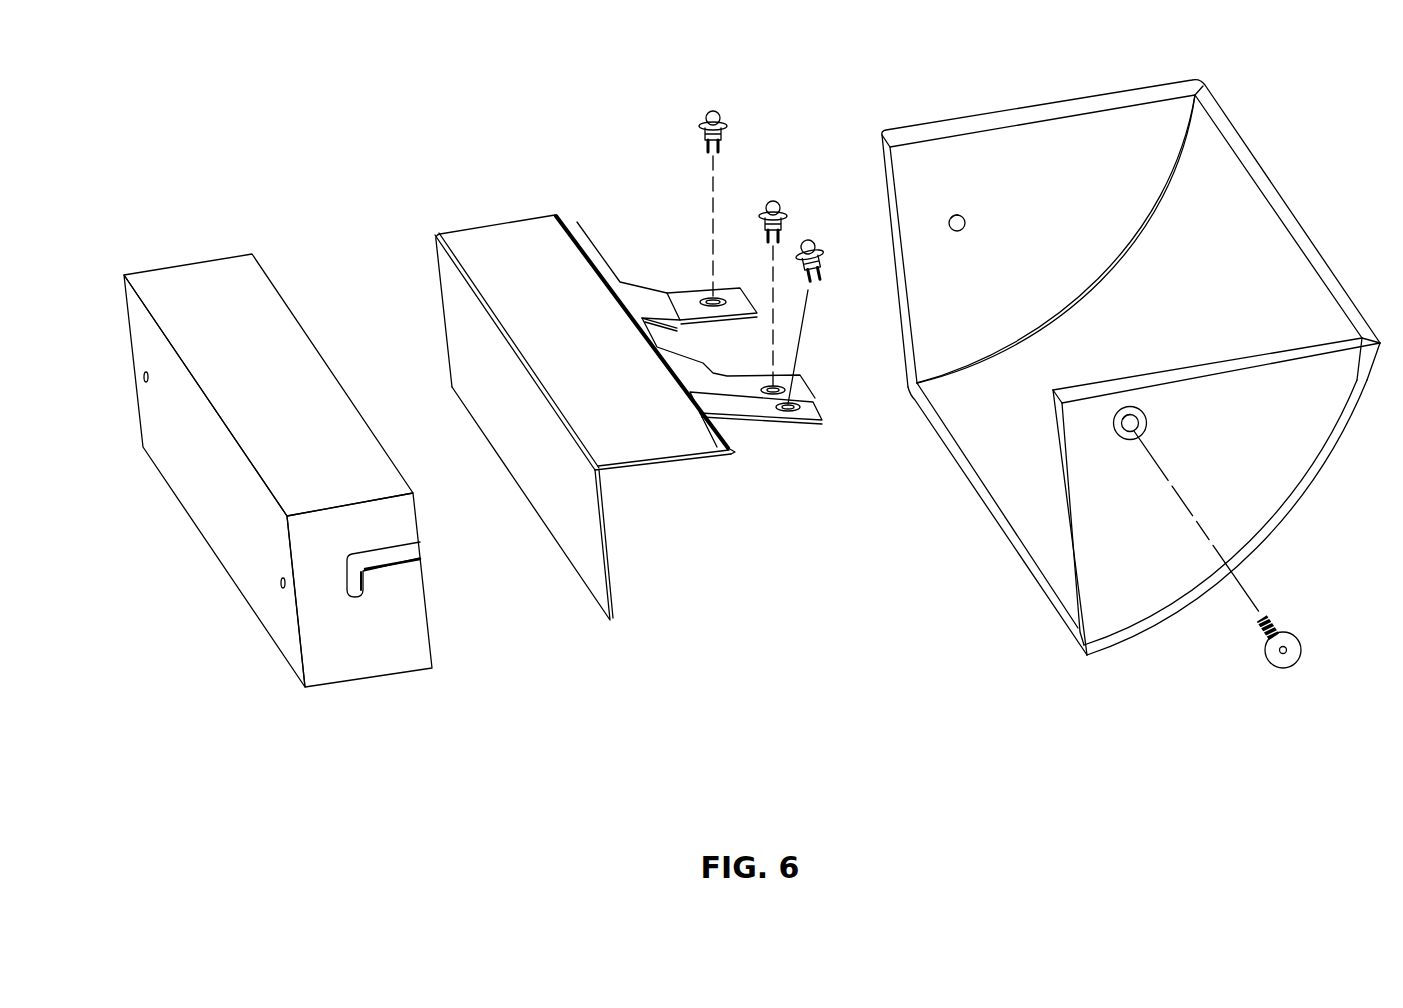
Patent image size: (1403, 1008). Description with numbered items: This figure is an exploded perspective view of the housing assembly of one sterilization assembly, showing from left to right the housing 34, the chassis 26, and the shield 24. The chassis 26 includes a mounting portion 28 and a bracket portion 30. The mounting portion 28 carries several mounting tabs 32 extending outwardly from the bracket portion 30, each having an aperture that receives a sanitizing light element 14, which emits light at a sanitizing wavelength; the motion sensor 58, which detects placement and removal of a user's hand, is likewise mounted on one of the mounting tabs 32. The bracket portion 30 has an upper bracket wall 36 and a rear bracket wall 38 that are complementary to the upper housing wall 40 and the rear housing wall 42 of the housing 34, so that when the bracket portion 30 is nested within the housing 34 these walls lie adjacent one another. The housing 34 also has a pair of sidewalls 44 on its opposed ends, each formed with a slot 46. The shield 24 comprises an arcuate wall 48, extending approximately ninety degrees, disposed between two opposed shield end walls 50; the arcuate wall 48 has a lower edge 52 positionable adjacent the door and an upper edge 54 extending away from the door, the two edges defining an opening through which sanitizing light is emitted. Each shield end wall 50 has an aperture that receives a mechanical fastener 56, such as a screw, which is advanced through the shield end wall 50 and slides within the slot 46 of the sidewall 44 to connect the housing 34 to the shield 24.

The sanitizing light element 14 is at (722, 93).
The shield 24 is at (1140, 403).
The chassis 26 is at (626, 380).
The mounting portion 28 is at (719, 339).
The bracket portion 30 is at (650, 484).
The mounting tab 32 is at (700, 313).
The housing 34 is at (290, 477).
The upper bracket wall 36 is at (648, 319).
The rear bracket wall 38 is at (583, 563).
The upper housing wall 40 is at (206, 277).
The rear housing wall 42 is at (213, 525).
The sidewall 44 is at (405, 657).
The slot 46 is at (412, 554).
The arcuate wall 48 is at (1134, 357).
The shield end wall 50 is at (1013, 137).
The lower edge 52 is at (997, 517).
The upper edge 54 is at (1350, 293).
The mechanical fastener 56 is at (1298, 678).
The motion sensor 58 is at (784, 177).